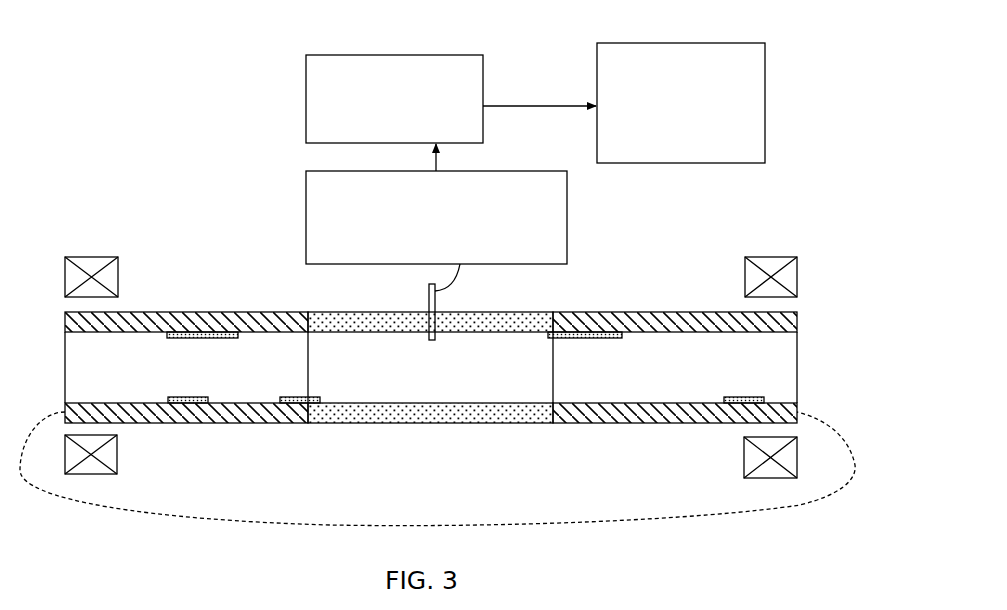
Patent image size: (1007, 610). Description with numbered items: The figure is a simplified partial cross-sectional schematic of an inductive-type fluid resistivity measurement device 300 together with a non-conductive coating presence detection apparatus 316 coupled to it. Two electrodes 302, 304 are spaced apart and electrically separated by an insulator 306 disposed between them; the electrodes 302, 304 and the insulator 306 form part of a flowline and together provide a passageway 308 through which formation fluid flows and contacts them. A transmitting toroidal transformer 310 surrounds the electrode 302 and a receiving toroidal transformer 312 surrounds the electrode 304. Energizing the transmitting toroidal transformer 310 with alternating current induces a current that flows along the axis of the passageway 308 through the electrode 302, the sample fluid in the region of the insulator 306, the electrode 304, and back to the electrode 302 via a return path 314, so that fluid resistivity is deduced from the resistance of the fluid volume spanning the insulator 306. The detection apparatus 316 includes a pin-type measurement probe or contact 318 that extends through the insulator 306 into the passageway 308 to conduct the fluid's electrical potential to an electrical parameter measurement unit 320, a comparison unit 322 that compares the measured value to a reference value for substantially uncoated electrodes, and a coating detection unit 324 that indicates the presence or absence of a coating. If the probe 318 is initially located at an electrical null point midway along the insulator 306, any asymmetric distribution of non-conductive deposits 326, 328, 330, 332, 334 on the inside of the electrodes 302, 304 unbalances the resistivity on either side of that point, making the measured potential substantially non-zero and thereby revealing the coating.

The fluid resistivity measurement device 300 is at (150, 157).
The electrode 302 is at (160, 312).
The electrode 304 is at (606, 312).
The insulator 306 is at (425, 423).
The passageway 308 is at (450, 377).
The transmitting toroidal transformer 310 is at (82, 257).
The receiving toroidal transformer 312 is at (770, 257).
The return path 314 is at (262, 521).
The non-conductive coating presence detection apparatus 316 is at (798, 97).
The measurement probe or contact 318 is at (435, 300).
The electrical parameter measurement unit 320 is at (306, 208).
The comparison unit 322 is at (306, 55).
The coating detection unit 324 is at (720, 43).
The non-conductive deposit 326 is at (198, 338).
The non-conductive deposit 328 is at (185, 397).
The non-conductive deposit 330 is at (290, 397).
The non-conductive deposit 332 is at (608, 338).
The non-conductive deposit 334 is at (745, 397).